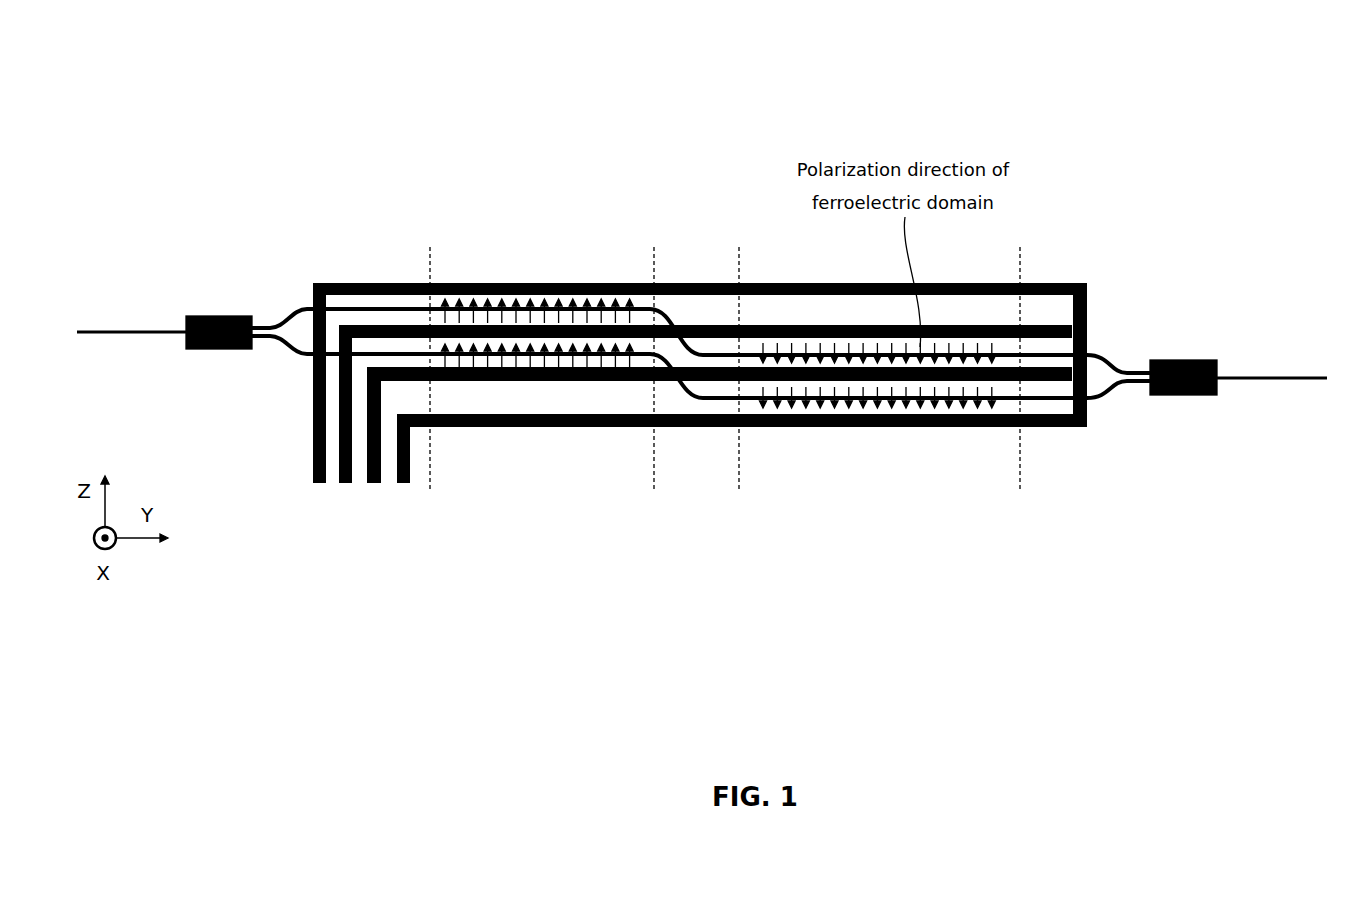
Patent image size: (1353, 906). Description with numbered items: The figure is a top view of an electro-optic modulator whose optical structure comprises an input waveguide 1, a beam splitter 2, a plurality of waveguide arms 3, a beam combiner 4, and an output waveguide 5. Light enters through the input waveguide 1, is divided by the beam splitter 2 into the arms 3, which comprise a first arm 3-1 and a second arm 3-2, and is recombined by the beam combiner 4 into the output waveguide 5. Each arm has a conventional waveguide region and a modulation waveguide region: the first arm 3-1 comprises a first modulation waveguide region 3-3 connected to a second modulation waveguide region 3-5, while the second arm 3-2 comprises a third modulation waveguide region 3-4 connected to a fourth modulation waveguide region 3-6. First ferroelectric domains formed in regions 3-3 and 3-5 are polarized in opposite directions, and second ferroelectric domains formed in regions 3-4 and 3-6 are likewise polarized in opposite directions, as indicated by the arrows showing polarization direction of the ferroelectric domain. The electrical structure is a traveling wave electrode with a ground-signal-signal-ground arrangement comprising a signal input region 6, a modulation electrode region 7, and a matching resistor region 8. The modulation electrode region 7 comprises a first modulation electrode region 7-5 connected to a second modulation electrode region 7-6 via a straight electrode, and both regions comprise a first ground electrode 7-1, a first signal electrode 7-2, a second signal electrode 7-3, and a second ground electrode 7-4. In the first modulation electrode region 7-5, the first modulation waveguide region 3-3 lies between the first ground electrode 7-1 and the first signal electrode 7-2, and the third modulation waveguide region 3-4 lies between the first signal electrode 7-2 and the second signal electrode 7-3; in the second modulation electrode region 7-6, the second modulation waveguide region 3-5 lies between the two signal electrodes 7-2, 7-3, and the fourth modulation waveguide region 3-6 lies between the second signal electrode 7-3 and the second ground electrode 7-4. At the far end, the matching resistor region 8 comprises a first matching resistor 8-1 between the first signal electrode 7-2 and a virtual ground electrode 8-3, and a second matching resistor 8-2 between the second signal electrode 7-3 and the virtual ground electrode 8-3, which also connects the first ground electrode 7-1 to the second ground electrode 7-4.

The input waveguide 1 is at (150, 330).
The beam splitter 2 is at (208, 316).
The arm 3 is at (680, 300).
The first arm 3-1 is at (337, 302).
The second arm 3-2 is at (273, 303).
The first modulation waveguide region 3-3 is at (466, 298).
The third modulation waveguide region 3-4 is at (402, 305).
The second modulation waveguide region 3-5 is at (795, 335).
The fourth modulation waveguide region 3-6 is at (770, 397).
The beam combiner 4 is at (1187, 360).
The output waveguide 5 is at (1246, 376).
The signal input region 6 is at (402, 486).
The modulation electrode region 7 is at (701, 452).
The first ground electrode 7-1 is at (828, 297).
The first signal electrode 7-2 is at (857, 383).
The second signal electrode 7-3 is at (890, 385).
The second ground electrode 7-4 is at (970, 417).
The first modulation electrode region 7-5 is at (442, 537).
The second modulation electrode region 7-6 is at (782, 537).
The matching resistor region 8 is at (1107, 456).
The first matching resistor 8-1 is at (1053, 337).
The second matching resistor 8-2 is at (1065, 383).
The virtual ground electrode 8-3 is at (1088, 423).